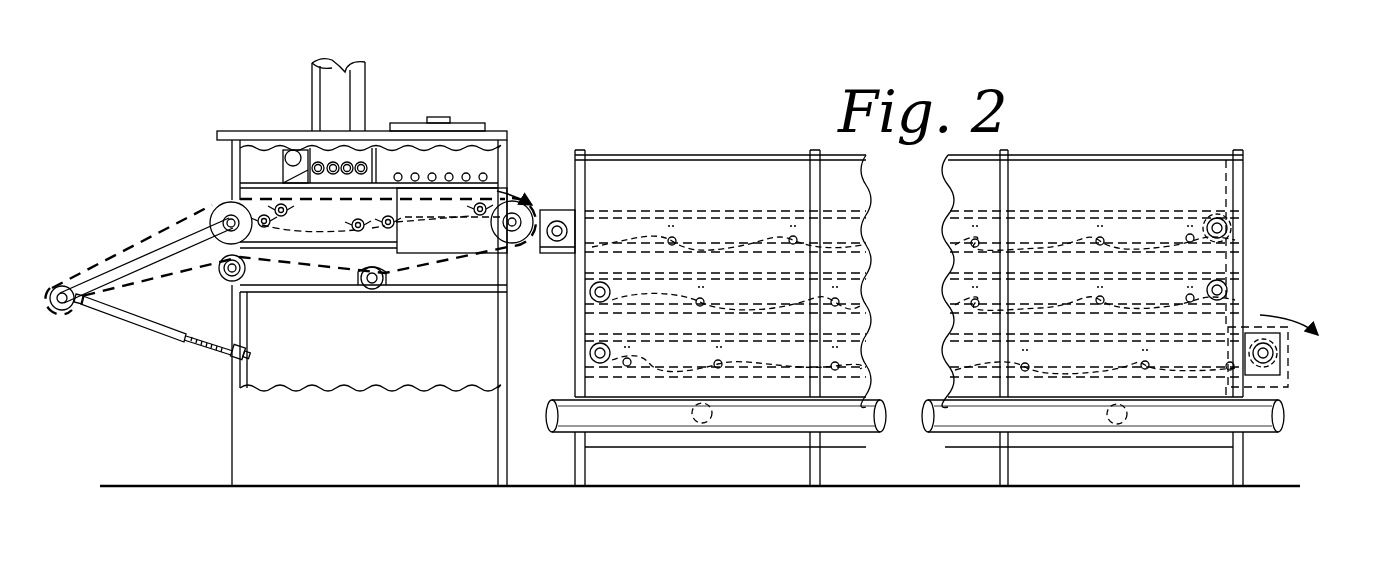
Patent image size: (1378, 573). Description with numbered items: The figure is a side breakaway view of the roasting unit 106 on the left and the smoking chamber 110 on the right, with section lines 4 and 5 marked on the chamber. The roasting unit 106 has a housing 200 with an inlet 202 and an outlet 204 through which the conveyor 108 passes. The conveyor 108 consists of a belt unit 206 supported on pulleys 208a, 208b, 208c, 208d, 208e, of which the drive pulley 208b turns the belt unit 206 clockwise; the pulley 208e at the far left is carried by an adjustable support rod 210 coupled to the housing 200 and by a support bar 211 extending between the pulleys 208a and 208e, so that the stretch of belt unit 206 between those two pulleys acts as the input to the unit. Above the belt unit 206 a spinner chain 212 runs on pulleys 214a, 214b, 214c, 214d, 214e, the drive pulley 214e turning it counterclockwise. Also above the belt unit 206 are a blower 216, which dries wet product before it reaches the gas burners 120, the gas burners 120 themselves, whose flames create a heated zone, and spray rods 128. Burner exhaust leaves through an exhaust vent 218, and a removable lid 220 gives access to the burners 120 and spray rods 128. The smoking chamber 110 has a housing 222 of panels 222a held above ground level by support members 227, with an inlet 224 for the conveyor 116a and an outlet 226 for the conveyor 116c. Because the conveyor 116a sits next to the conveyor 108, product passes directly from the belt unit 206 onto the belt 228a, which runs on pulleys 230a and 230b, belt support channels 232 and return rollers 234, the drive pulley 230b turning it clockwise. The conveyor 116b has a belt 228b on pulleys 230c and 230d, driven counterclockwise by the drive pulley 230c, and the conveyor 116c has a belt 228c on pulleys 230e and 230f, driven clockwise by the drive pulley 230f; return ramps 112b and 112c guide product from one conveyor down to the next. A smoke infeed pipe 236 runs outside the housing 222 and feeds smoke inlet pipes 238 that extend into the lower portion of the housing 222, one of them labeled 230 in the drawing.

The roasting unit 106 is at (157, 115).
The conveyor 108 is at (158, 218).
The smoking chamber 110 is at (1101, 117).
The return ramp 112b is at (1236, 258).
The return ramp 112c is at (590, 354).
The conveyor 116a is at (622, 204).
The conveyor 116b is at (862, 258).
The conveyor 116c is at (862, 320).
The gas burners 120 is at (346, 170).
The spray rods 128 is at (486, 171).
The housing 200 is at (235, 131).
The inlet 202 is at (232, 195).
The outlet 204 is at (512, 186).
The belt unit 206 is at (120, 252).
The pulley 208a is at (222, 204).
The drive pulley 208b is at (520, 236).
The pulley 208c is at (383, 284).
The pulley 208d is at (227, 283).
The pulley 208e is at (47, 313).
The adjustable support rod 210 is at (145, 335).
The support bar 211 is at (133, 268).
The spinner chain 212 is at (448, 220).
The pulley 214a is at (282, 216).
The pulley 214b is at (485, 204).
The pulley 214c is at (390, 228).
The pulley 214d is at (358, 232).
The drive pulley 214e is at (263, 228).
The blower 216 is at (282, 160).
The exhaust vent 218 is at (312, 78).
The removable lid 220 is at (440, 115).
The housing 222 is at (1006, 117).
The panels 222a is at (700, 157).
The inlet 224 is at (572, 200).
The outlet 226 is at (1247, 320).
The support members 227 is at (572, 452).
The belt 228a is at (752, 212).
The belt 228b is at (868, 290).
The belt 228c is at (872, 350).
The roller 230 is at (1132, 418).
The pulley 230a is at (557, 243).
The drive pulley 230b is at (1232, 232).
The drive pulley 230c is at (615, 287).
The pulley 230d is at (1232, 291).
The pulley 230e is at (562, 372).
The drive pulley 230f is at (1282, 352).
The belt support channels 232 is at (695, 228).
The return rollers 234 is at (665, 238).
The smoke infeed pipe 236 is at (648, 447).
The smoke inlet pipes 238 is at (722, 422).
The section line 4- 4 is at (1225, 150).
The section line 5- 5 is at (1140, 287).